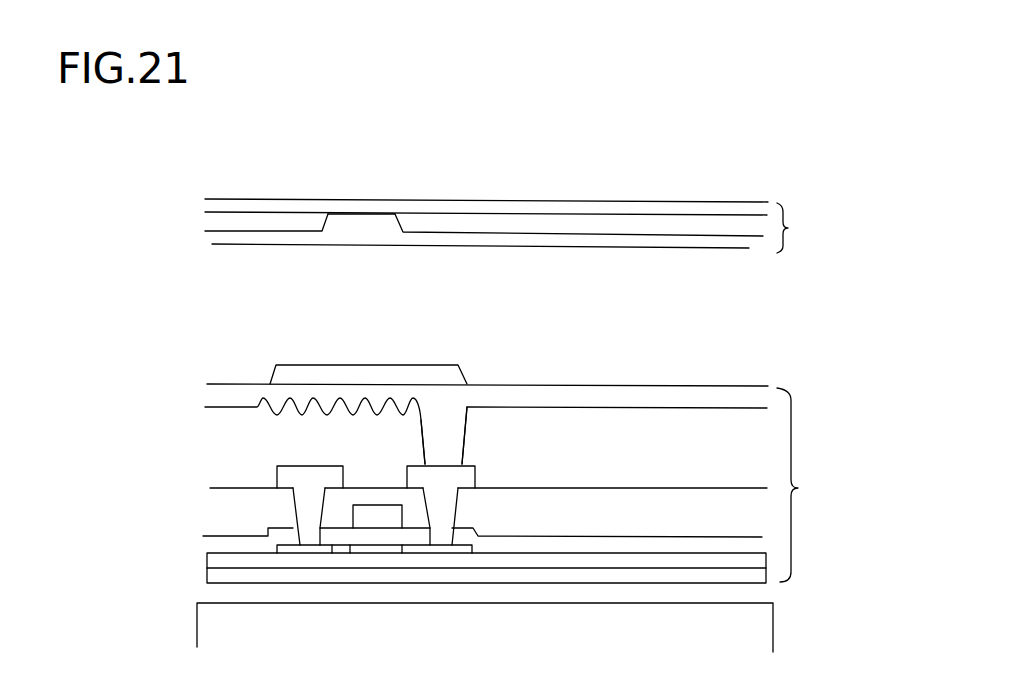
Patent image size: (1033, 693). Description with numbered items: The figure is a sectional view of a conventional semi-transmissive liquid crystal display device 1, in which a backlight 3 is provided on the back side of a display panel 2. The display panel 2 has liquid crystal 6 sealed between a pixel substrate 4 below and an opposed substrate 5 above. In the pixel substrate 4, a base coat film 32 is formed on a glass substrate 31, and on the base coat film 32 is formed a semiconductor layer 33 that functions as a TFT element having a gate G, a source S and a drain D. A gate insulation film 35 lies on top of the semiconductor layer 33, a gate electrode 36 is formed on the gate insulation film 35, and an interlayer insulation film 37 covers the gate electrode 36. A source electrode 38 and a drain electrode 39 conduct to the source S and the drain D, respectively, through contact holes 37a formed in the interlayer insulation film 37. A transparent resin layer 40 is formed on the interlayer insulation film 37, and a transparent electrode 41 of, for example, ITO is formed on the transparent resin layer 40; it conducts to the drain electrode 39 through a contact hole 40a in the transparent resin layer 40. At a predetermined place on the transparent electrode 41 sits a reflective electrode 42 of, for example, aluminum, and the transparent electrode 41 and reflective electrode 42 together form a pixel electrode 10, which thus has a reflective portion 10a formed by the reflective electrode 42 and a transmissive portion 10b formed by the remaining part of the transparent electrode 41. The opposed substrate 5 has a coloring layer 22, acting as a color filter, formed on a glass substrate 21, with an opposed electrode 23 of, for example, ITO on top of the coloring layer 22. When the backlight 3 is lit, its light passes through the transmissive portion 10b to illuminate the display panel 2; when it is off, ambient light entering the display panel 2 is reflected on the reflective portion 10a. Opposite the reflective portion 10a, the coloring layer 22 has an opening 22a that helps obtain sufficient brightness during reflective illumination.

The liquid crystal display device 1 is at (860, 187).
The display panel 2 is at (745, 200).
The backlight 3 is at (752, 636).
The pixel substrate 4 is at (801, 485).
The opposed substrate 5 is at (791, 228).
The liquid crystal 6 is at (740, 326).
The pixel electrode 10 is at (512, 311).
The reflective portion 10a is at (353, 377).
The transmissive portion 10b is at (600, 386).
The glass substrate 21 is at (252, 202).
The coloring layer 22 is at (212, 219).
The opening 22a is at (357, 224).
The opposed electrode 23 is at (217, 240).
The glass substrate 31 is at (625, 577).
The base coat film 32 is at (670, 562).
The semiconductor layer 33 is at (395, 553).
The gate insulation film 35 is at (417, 536).
The gate electrode 36 is at (363, 510).
The interlayer insulation film 37 is at (683, 510).
The contact hole 37a is at (305, 537).
The source electrode 38 is at (290, 464).
The drain electrode 39 is at (477, 470).
The transparent resin layer 40 is at (228, 426).
The contact hole 40a is at (438, 463).
The transparent electrode 41 is at (493, 396).
The reflective electrode 42 is at (435, 377).
The source S is at (337, 548).
The gate G is at (380, 550).
The drain D is at (433, 550).